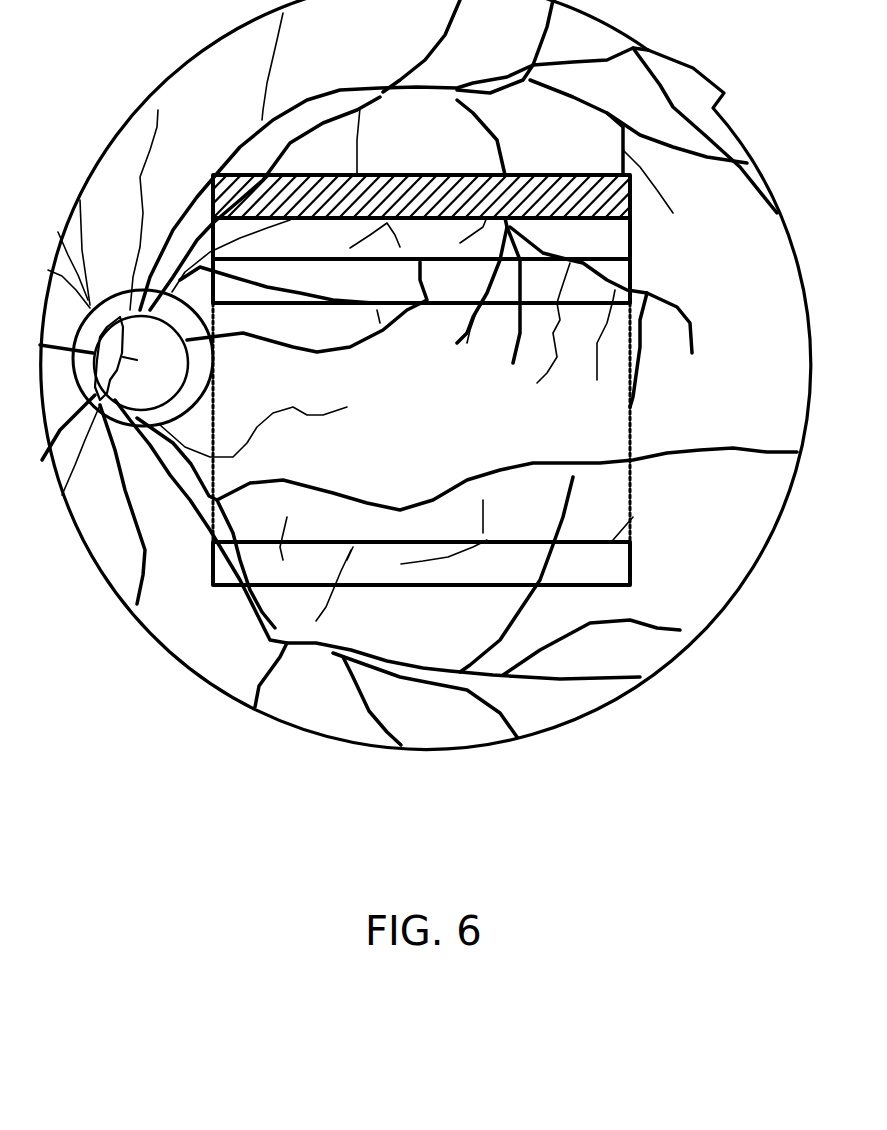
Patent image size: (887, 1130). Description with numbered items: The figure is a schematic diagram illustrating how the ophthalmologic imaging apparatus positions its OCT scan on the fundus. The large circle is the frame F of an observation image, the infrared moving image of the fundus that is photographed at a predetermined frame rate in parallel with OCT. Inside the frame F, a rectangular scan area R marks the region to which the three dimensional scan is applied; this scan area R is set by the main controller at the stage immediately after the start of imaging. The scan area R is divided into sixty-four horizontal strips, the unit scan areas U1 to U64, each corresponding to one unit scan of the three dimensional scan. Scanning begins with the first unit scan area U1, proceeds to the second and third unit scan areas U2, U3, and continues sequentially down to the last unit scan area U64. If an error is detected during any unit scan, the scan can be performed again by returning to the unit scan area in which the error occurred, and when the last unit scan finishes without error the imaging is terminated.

The frame of an observation image F is at (790, 232).
The scan area R is at (630, 492).
The unit scan area U1 is at (552, 175).
The unit scan area U2 is at (626, 244).
The unit scan area U3 is at (626, 284).
The unit scan area U64 is at (626, 561).